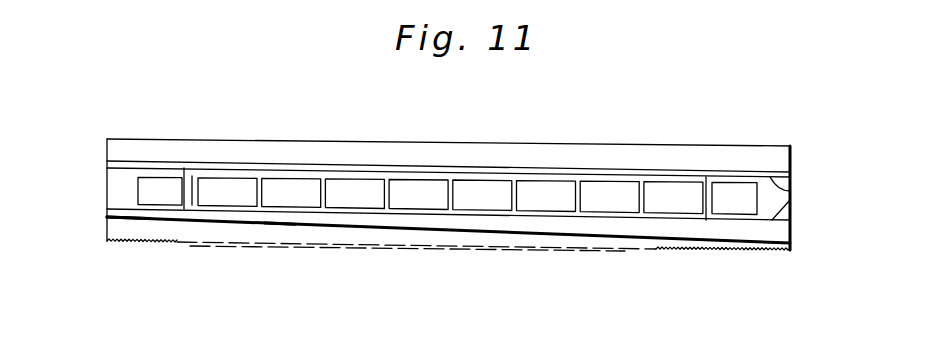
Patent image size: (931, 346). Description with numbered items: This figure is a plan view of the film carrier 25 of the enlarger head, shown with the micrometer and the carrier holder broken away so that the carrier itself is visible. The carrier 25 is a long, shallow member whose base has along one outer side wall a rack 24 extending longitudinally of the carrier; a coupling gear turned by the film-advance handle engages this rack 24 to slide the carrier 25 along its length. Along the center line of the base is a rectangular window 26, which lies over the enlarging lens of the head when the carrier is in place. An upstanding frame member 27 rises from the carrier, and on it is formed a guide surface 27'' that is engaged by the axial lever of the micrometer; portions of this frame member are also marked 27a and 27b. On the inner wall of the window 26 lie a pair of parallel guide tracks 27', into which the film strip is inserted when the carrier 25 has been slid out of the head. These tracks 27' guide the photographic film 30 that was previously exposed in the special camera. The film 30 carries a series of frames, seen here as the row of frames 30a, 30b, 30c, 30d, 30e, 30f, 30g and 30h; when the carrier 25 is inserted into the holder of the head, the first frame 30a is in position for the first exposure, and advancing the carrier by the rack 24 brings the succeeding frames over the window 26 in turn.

The film carrier 25 is at (115, 226).
The rack 24 is at (645, 252).
The rectangular window 26 is at (167, 196).
The upstanding frame member 27 is at (448, 189).
The frame lower flange (left end) 27a is at (138, 219).
The guide surface 27'' is at (283, 255).
The guide tracks 27' is at (811, 189).
The frame right-end wall portion 27b is at (772, 235).
The photographic film 30 is at (190, 184).
The first frame 30a is at (225, 194).
The cell b 30b is at (307, 194).
The cell c 30c is at (362, 194).
The cell d 30d is at (423, 196).
The cell e 30e is at (487, 196).
The cell f 30f is at (553, 196).
The cell g 30g is at (617, 196).
The cell h 30h is at (688, 203).